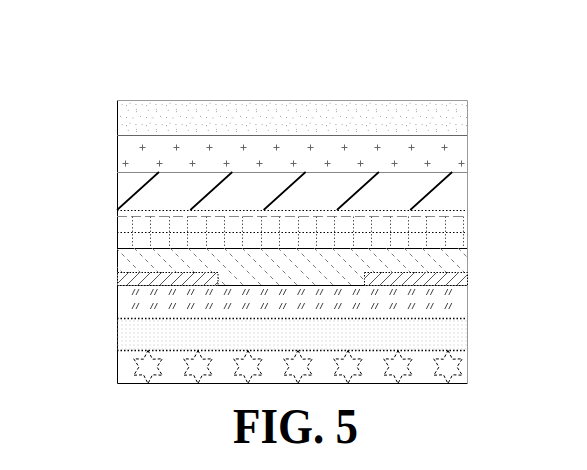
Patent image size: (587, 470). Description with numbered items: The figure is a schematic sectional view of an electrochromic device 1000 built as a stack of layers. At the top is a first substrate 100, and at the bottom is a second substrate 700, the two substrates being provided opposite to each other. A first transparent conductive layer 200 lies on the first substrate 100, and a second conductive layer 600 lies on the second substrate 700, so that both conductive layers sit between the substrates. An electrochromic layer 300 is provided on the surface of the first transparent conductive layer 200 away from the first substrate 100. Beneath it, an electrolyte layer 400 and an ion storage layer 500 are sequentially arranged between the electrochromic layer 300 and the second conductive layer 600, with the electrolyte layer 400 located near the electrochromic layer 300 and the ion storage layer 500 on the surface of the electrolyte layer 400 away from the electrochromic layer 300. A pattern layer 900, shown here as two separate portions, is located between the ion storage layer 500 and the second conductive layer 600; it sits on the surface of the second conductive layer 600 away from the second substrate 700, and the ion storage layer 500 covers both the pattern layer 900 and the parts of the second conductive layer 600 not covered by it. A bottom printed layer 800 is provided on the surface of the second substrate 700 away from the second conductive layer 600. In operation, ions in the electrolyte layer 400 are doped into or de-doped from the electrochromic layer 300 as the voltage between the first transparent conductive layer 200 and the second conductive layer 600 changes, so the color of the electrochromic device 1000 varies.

The electrochromic device 1000 is at (312, 72).
The first substrate 100 is at (450, 123).
The first transparent conductive layer 200 is at (450, 158).
The electrochromic layer 300 is at (450, 193).
The electrolyte layer 400 is at (450, 233).
The ion storage layer 500 is at (450, 269).
The second conductive layer 600 is at (450, 306).
The second substrate 700 is at (450, 339).
The bottom printed layer 800 is at (450, 374).
The pattern layer 900 is at (117, 275).